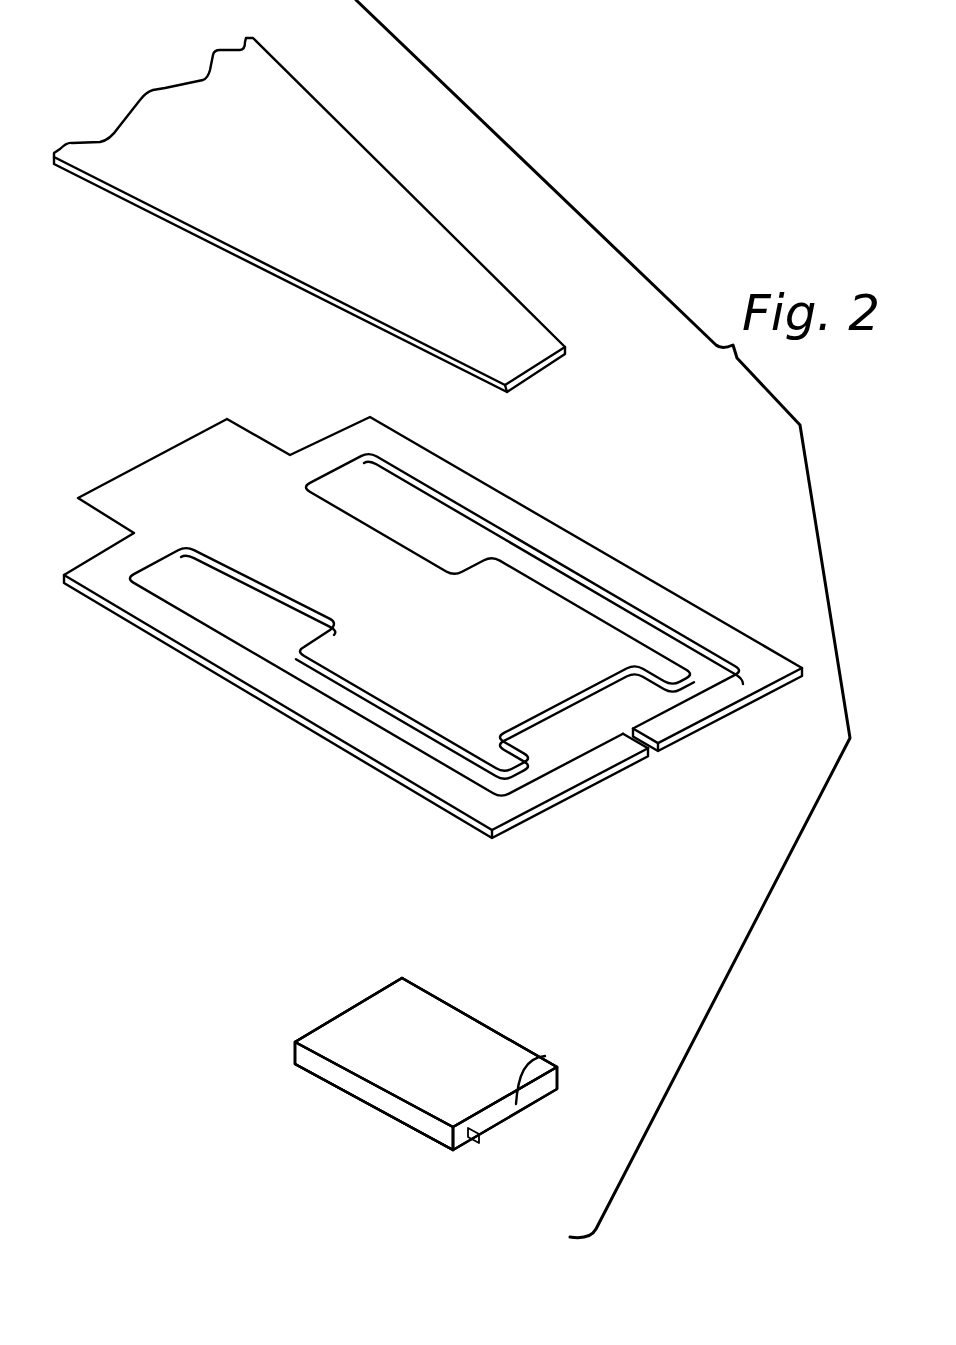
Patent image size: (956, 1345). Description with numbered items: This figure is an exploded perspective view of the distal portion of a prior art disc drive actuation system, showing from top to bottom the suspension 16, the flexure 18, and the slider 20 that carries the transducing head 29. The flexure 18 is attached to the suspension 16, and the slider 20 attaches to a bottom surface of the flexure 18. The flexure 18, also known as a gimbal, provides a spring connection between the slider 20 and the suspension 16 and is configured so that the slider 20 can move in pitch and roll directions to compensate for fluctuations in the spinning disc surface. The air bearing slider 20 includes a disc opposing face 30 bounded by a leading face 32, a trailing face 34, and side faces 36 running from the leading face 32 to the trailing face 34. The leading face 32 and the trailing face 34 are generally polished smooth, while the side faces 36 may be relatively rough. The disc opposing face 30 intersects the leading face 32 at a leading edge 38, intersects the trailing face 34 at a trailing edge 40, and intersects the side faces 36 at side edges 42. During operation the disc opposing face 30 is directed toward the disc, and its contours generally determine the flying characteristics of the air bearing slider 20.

The suspension 16 is at (308, 138).
The flexure 18 is at (541, 505).
The slider 20 is at (417, 993).
The transducing head 29 is at (474, 1136).
The disc opposing face 30 is at (385, 1121).
The leading face 32 is at (340, 1009).
The trailing face 34 is at (542, 1096).
The side faces 36 is at (537, 1037).
The leading edge 38 is at (375, 992).
The trailing edge 40 is at (546, 1054).
The side edges 42 is at (523, 1045).